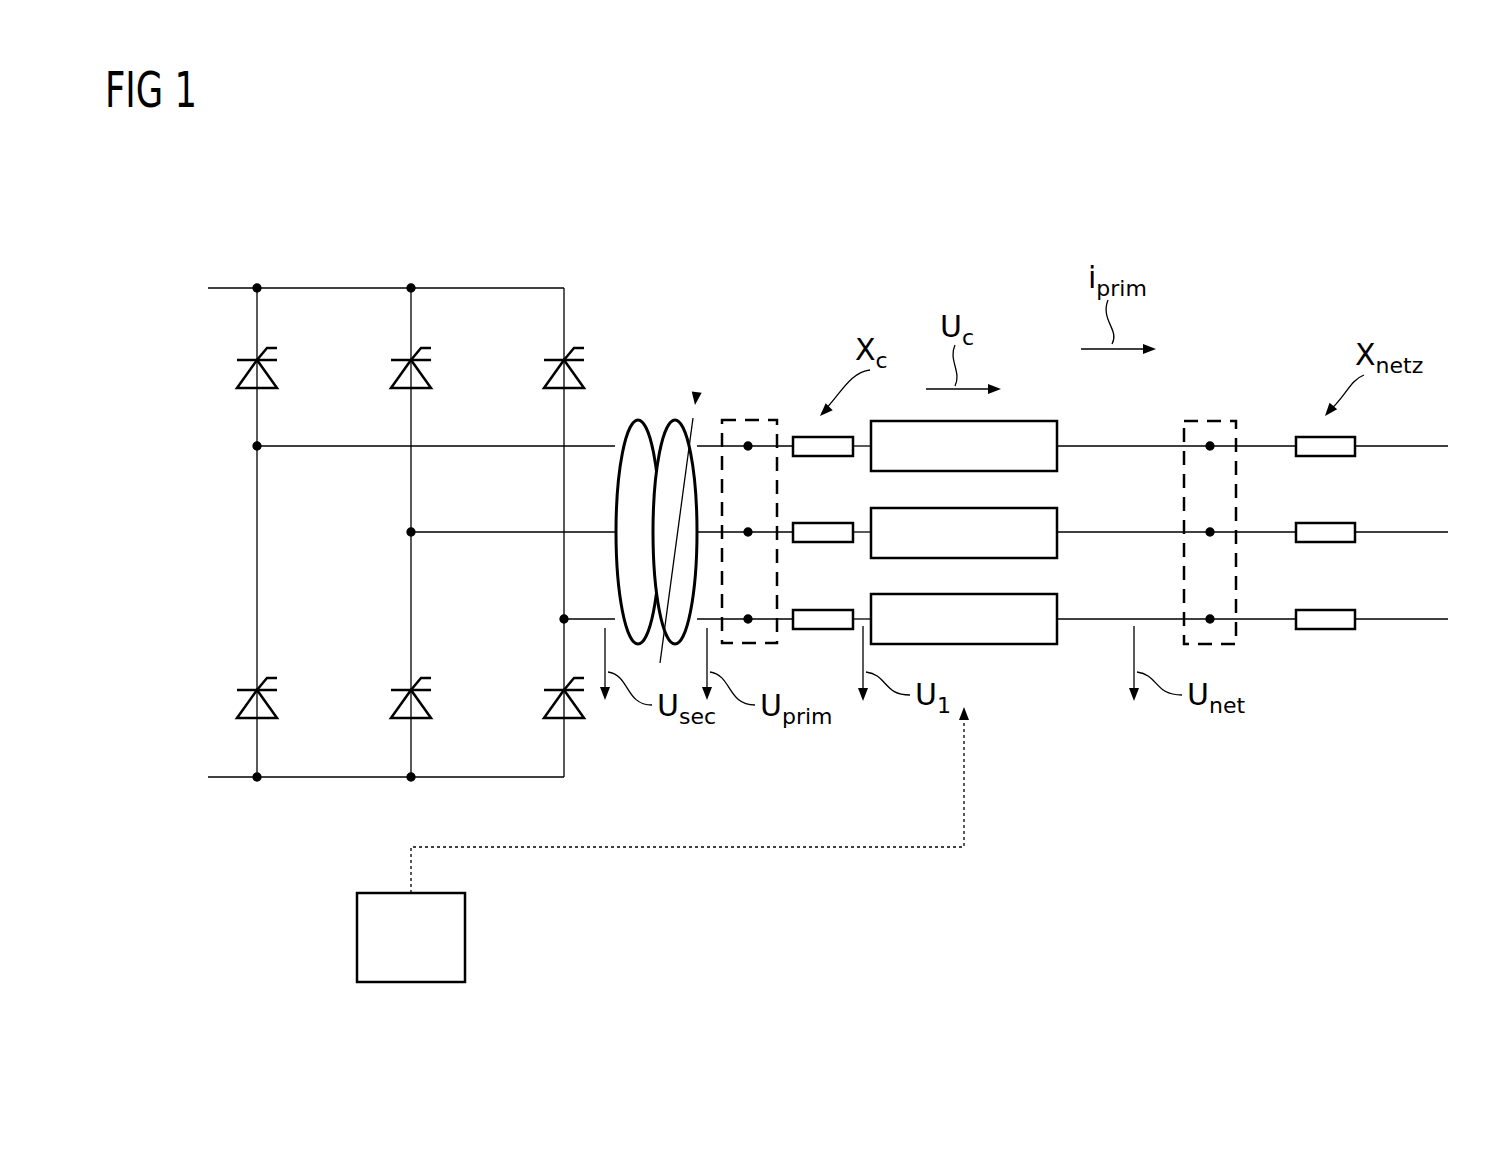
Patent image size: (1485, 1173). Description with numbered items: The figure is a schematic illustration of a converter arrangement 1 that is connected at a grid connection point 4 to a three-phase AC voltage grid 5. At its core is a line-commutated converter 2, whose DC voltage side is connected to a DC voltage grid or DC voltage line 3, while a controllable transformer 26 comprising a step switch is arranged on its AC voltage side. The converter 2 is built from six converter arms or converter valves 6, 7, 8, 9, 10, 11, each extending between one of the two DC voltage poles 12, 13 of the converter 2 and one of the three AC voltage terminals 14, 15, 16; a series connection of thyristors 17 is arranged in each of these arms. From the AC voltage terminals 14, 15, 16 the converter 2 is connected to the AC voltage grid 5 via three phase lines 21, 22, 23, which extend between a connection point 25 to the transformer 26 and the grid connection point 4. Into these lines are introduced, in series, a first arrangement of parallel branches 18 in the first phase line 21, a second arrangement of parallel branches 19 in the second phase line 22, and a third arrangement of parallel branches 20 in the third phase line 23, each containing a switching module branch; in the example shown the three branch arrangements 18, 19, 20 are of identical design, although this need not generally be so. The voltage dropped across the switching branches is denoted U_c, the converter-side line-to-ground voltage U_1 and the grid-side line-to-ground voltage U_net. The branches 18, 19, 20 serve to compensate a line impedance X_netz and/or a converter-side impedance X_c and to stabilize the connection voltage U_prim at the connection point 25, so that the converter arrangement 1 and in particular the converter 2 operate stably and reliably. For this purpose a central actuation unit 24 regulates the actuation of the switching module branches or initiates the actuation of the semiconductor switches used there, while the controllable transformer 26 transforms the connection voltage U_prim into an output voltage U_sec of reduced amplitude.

The converter arrangement 1 is at (410, 185).
The line-commutated converter 2 is at (482, 262).
The DC voltage line 3 is at (178, 283).
The grid connection point 4 is at (1222, 420).
The three-phase AC voltage grid 5 is at (1410, 420).
The converter arm 6 is at (255, 420).
The converter arm 7 is at (409, 420).
The converter arm 8 is at (562, 420).
The converter arm 9 is at (255, 750).
The converter arm 10 is at (409, 750).
The converter arm 11 is at (562, 750).
The DC voltage pole 12 is at (327, 287).
The DC voltage pole 13 is at (315, 779).
The AC voltage terminal 14 is at (320, 448).
The AC voltage terminal 15 is at (480, 534).
The AC voltage terminal 16 is at (593, 617).
The thyristors 17 is at (238, 376).
The first arrangement of parallel branches 18 is at (1030, 420).
The second arrangement of parallel branches 19 is at (1058, 545).
The third arrangement of parallel branches 20 is at (1024, 646).
The first phase line 21 is at (1116, 444).
The second phase line 22 is at (1135, 530).
The third phase line 23 is at (1095, 622).
The central actuation unit 24 is at (355, 940).
The connection point 25 is at (765, 418).
The controllable transformer 26 is at (660, 408).